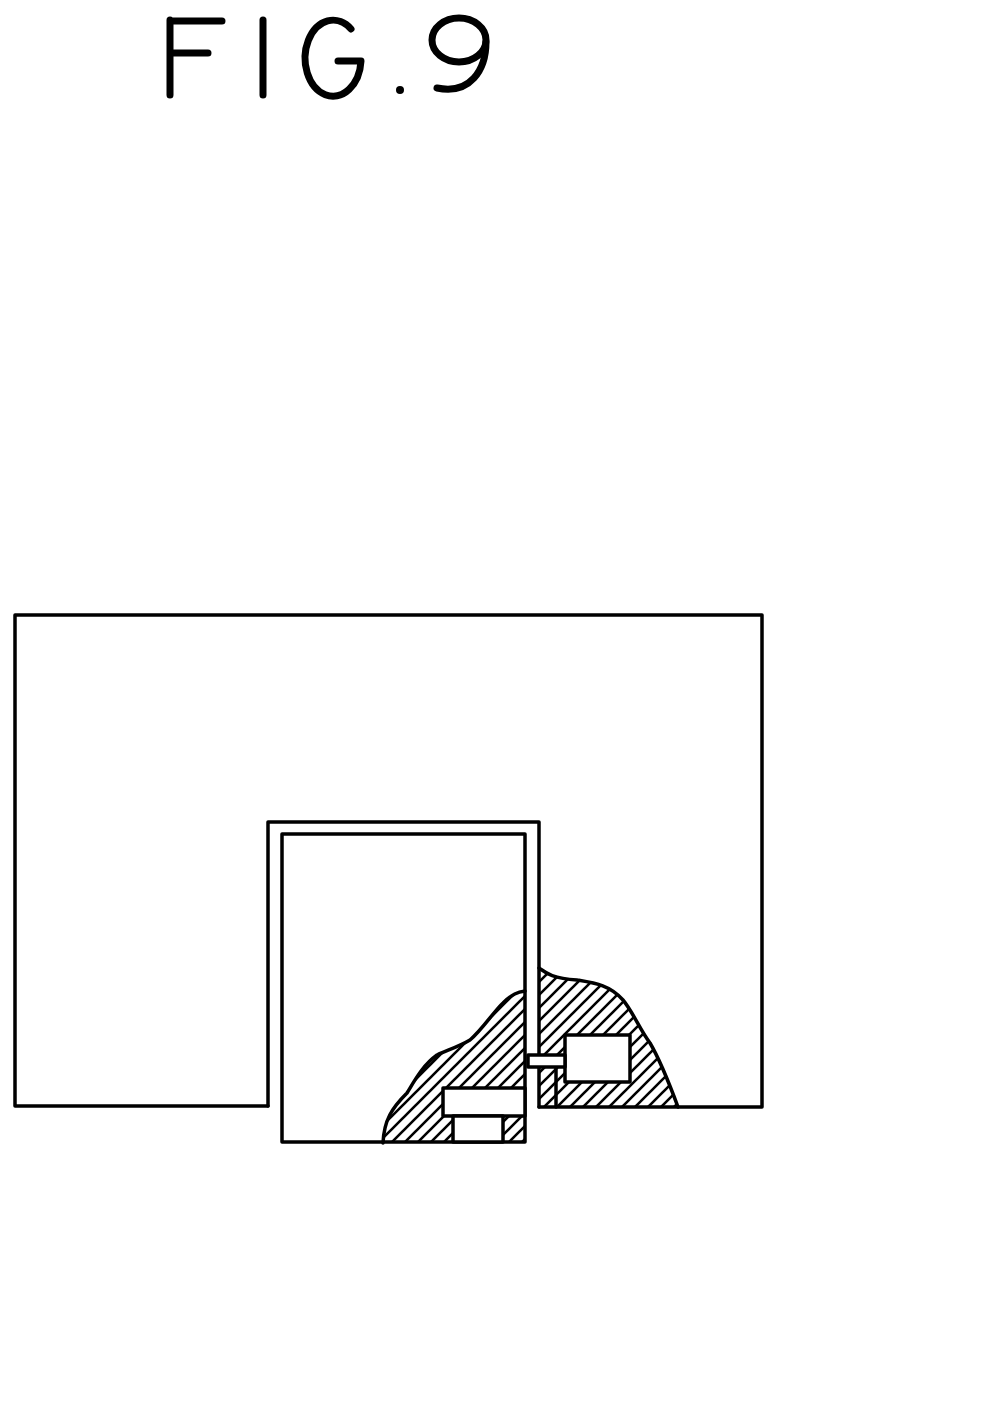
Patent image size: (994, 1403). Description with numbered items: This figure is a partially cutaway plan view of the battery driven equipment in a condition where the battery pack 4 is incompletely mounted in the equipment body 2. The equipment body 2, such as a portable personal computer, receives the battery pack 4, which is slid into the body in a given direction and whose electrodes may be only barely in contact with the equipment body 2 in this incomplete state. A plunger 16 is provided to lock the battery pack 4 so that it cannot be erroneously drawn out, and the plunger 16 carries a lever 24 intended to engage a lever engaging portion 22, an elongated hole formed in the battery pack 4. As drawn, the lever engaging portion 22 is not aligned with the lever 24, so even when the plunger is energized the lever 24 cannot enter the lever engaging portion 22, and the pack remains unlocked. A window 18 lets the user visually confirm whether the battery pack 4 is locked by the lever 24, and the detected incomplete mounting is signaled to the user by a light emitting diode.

The equipment body 2 is at (762, 858).
The battery pack 4 is at (330, 1117).
The plunger 16 is at (610, 1060).
The window 18 is at (487, 1135).
The lever engaging portion 22 is at (477, 1100).
The lever 24 is at (550, 1060).